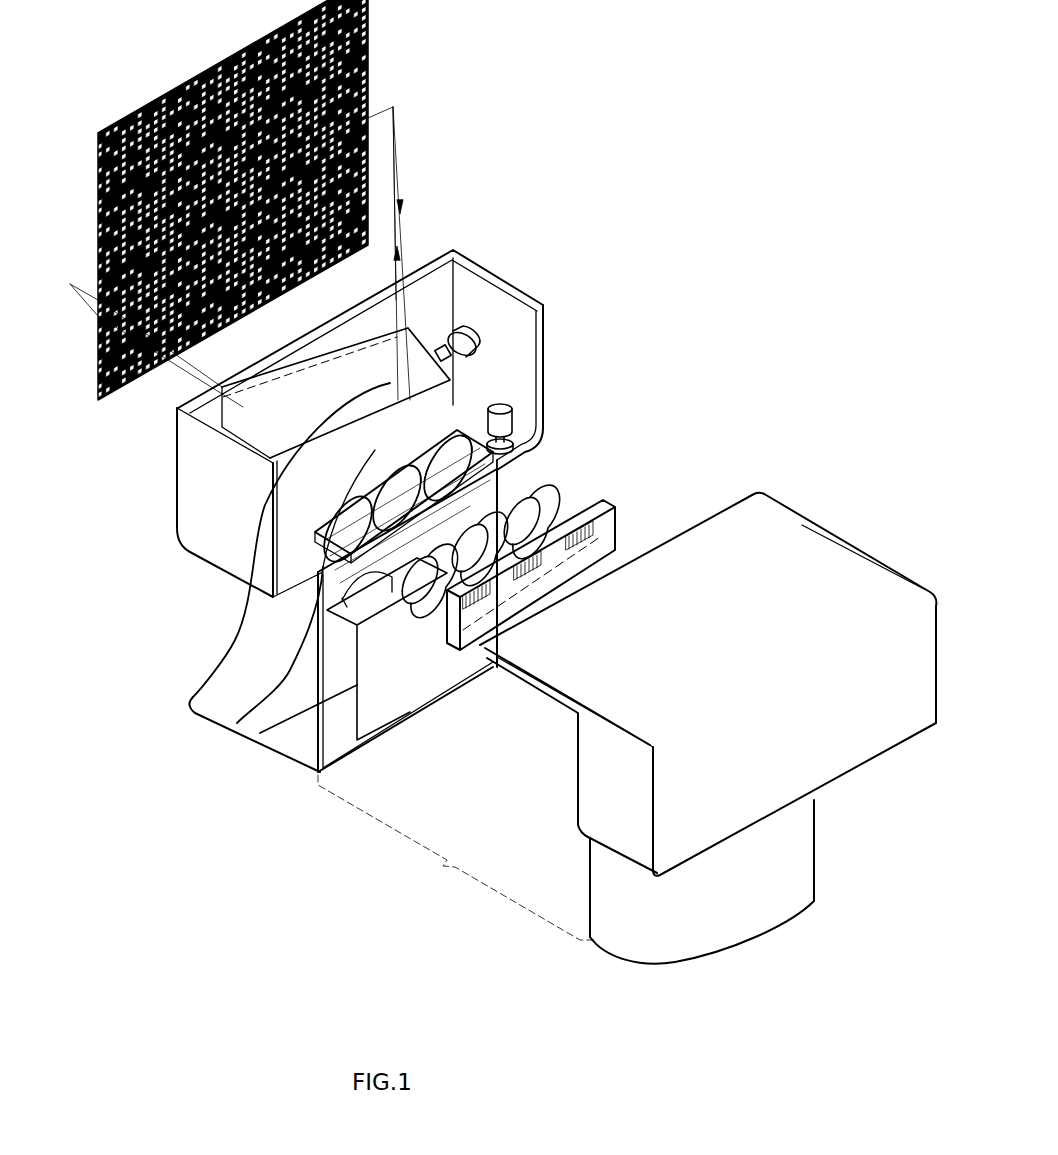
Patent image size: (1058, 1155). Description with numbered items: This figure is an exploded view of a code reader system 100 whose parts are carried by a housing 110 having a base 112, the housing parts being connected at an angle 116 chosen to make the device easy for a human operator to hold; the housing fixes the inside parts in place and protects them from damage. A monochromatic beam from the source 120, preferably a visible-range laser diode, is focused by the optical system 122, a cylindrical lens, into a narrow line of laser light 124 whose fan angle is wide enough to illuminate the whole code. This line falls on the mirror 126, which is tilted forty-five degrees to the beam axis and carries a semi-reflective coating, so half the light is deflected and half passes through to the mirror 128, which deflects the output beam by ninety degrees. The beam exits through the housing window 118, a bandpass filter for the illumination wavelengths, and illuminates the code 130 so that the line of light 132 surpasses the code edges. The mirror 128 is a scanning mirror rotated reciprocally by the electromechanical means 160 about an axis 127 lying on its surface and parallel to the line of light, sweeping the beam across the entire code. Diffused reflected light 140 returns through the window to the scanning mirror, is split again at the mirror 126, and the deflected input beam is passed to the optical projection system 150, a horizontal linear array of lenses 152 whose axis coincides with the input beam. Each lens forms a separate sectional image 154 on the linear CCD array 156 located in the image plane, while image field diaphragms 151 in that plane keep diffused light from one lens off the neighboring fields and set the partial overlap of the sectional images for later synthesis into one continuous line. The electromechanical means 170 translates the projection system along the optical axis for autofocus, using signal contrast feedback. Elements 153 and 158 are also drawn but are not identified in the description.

The system 100 is at (545, 195).
The housing 110 is at (627, 728).
The base 112 is at (257, 698).
The angle 116 is at (187, 548).
The housing window 118 is at (345, 345).
The source 120 is at (393, 695).
The optical system 122 is at (237, 723).
The narrow line of laser light 124 is at (250, 583).
The mirror 126 is at (297, 484).
The axis 127 is at (468, 365).
The mirror 128 is at (267, 433).
The code 130 is at (368, 40).
The line of light 132 is at (395, 118).
The diffused reflected light 140 is at (405, 230).
The optical projection system 150 is at (368, 493).
The image field diaphragms 151 is at (575, 585).
The lenses 152 is at (520, 445).
The support post 153 is at (540, 470).
The sectional images 154 is at (583, 517).
The linear CCD array 156 is at (611, 533).
The drive roller 158 is at (530, 493).
The electromechanical means 160 is at (460, 337).
The electromechanical means 170 is at (505, 410).